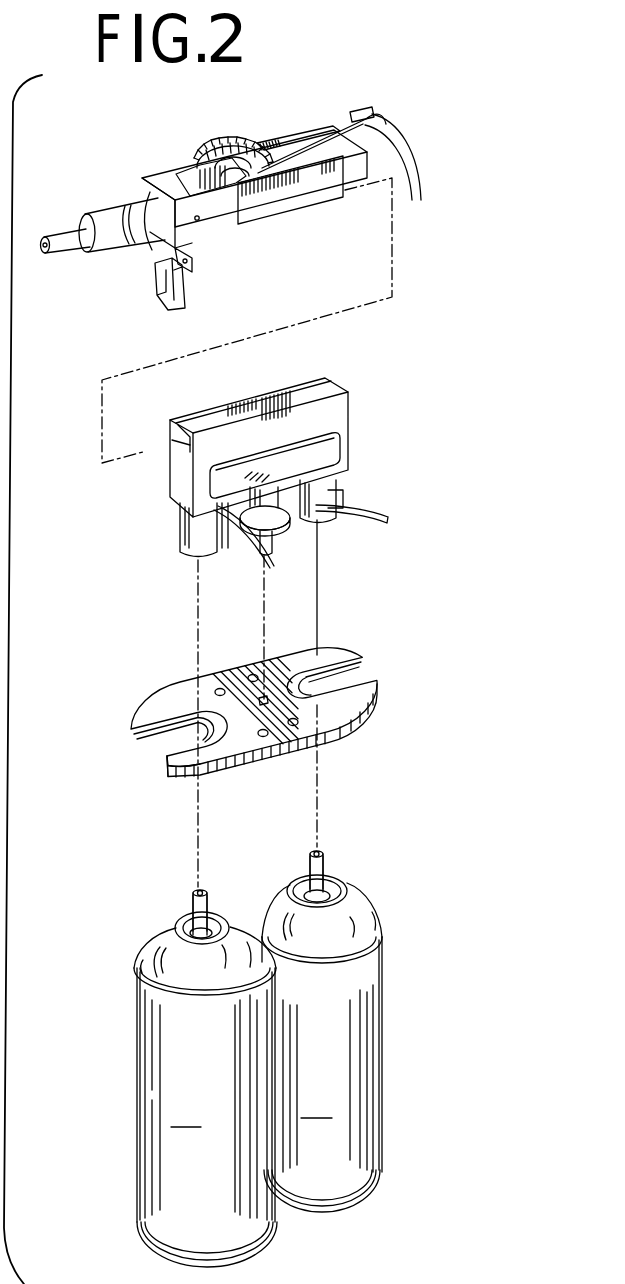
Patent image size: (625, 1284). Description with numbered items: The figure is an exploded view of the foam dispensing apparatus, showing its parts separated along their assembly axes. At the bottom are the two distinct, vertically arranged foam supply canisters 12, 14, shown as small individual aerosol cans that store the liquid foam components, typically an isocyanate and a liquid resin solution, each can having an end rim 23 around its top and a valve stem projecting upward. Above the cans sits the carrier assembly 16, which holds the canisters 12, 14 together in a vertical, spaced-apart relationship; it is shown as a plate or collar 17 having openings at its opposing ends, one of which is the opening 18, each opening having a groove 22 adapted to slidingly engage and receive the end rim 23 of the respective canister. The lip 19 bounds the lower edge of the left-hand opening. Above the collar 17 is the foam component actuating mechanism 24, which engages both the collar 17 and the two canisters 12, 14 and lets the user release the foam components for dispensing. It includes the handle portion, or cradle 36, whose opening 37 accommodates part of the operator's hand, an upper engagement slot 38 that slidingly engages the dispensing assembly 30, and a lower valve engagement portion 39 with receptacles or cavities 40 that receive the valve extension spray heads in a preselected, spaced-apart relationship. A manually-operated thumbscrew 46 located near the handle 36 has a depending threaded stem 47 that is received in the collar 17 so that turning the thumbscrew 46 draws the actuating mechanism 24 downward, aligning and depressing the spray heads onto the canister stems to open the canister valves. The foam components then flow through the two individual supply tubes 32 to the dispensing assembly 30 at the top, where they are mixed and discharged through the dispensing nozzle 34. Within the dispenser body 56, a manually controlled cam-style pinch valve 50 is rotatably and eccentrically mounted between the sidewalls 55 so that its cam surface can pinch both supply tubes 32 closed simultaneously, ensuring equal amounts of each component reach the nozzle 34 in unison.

The foam supply canister 12 is at (205, 1078).
The foam supply canister 14 is at (322, 1031).
The carrier assembly 16 is at (243, 704).
The plate or collar 17 is at (333, 712).
The opening 18 is at (358, 682).
The lip of plate 19 is at (147, 763).
The groove 22 is at (140, 743).
The end rim 23 is at (177, 923).
The foam component actuating mechanism 24 is at (258, 418).
The dispensing assembly 30 is at (162, 178).
The foam component supply tube 32 is at (413, 153).
The dispensing nozzle 34 is at (107, 227).
The handle portion or cradle 36 is at (183, 470).
The opening 37 is at (303, 448).
The upper engagement slot 38 is at (325, 388).
The lower valve engagement portion 39 is at (187, 565).
The receptacle or cavity 40 is at (183, 550).
The thumbscrew 46 is at (300, 515).
The threaded stem 47 is at (277, 547).
The cam-style pinch valve 50 is at (227, 133).
The sidewall 55 is at (267, 143).
The dispenser body 56 is at (313, 143).